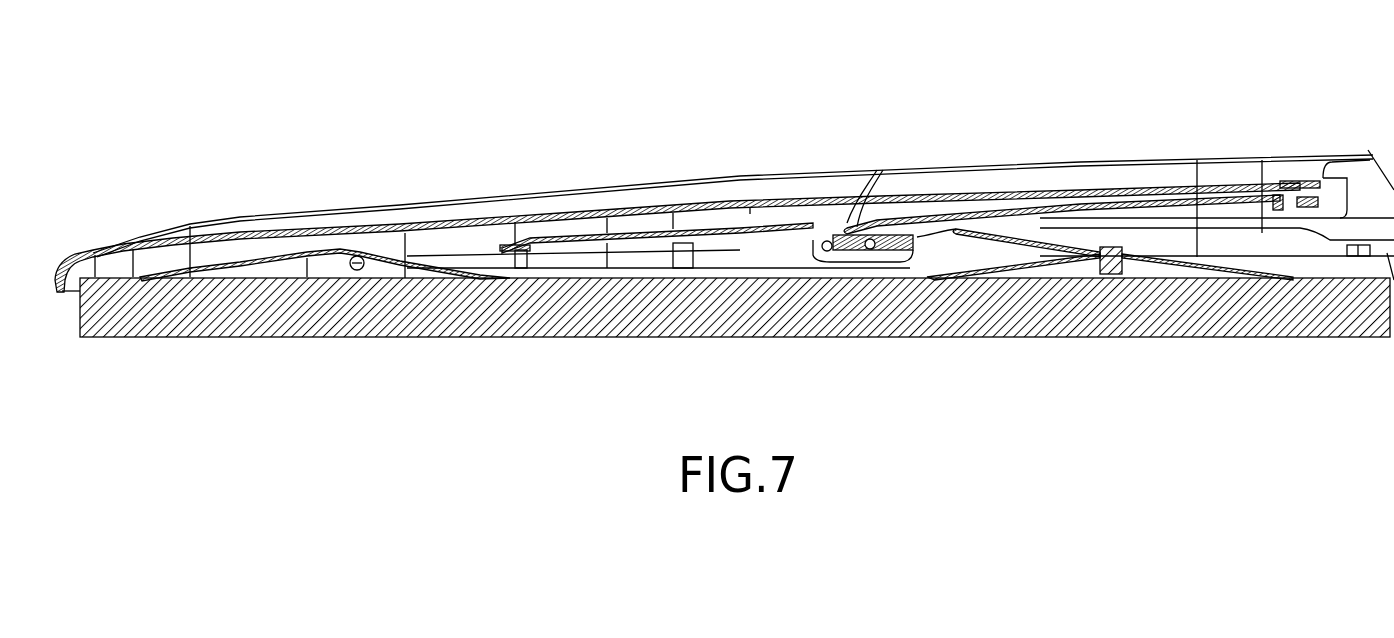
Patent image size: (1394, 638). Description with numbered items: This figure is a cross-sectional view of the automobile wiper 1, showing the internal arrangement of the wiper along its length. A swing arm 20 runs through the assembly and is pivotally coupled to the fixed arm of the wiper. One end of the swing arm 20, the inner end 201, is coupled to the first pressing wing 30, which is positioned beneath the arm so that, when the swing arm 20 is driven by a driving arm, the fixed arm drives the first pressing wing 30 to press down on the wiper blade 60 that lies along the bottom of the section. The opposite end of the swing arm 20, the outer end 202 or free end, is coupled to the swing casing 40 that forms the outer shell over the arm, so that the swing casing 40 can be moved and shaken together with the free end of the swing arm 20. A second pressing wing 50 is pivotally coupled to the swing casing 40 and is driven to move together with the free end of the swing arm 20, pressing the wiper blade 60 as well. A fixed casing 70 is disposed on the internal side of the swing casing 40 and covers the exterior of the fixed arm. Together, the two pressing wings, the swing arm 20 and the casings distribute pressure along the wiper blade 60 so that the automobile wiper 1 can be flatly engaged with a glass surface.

The automobile wiper 1 is at (745, 29).
The swing arm 20 is at (733, 215).
The inner end 201 is at (1087, 254).
The outer end 202 is at (503, 245).
The first pressing wing 30 is at (1185, 277).
The swing casing 40 is at (488, 197).
The second pressing wing 50 is at (233, 278).
The wiper blade 60 is at (847, 325).
The fixed casing 70 is at (1123, 198).